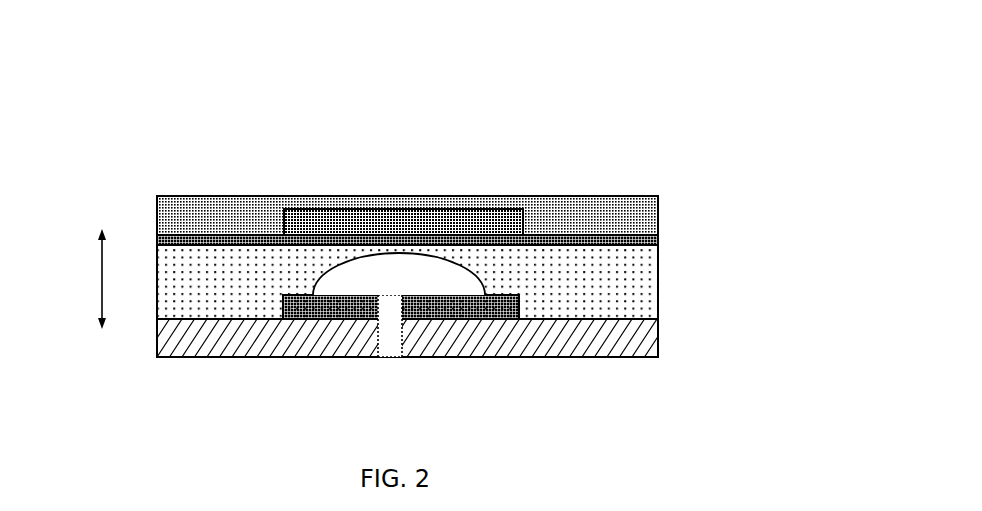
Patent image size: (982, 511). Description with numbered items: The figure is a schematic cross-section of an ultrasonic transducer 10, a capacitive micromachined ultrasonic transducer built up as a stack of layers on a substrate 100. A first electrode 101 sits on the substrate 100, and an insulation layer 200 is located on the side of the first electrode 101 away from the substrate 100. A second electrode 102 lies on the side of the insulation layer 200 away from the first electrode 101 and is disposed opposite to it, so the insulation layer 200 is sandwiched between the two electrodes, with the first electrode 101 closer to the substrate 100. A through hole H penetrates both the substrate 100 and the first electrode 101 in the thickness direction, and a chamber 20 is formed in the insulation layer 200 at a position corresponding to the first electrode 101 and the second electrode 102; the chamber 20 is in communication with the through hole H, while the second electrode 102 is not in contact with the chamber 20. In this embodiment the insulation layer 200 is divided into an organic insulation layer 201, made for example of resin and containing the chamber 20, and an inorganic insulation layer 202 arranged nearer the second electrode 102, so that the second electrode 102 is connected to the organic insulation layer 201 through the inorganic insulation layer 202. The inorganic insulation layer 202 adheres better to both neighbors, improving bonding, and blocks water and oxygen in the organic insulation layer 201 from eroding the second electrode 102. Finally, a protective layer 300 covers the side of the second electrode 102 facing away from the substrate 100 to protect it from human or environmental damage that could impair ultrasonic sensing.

The ultrasonic transducer 10 is at (72, 57).
The substrate 100 is at (223, 337).
The first electrode 101 is at (312, 296).
The second electrode 102 is at (473, 220).
The chamber 20 is at (399, 274).
The insulation layer 200 is at (460, 273).
The organic insulation layer 201 is at (648, 288).
The inorganic insulation layer 202 is at (658, 239).
The protective layer 300 is at (583, 205).
The through hole H is at (385, 360).